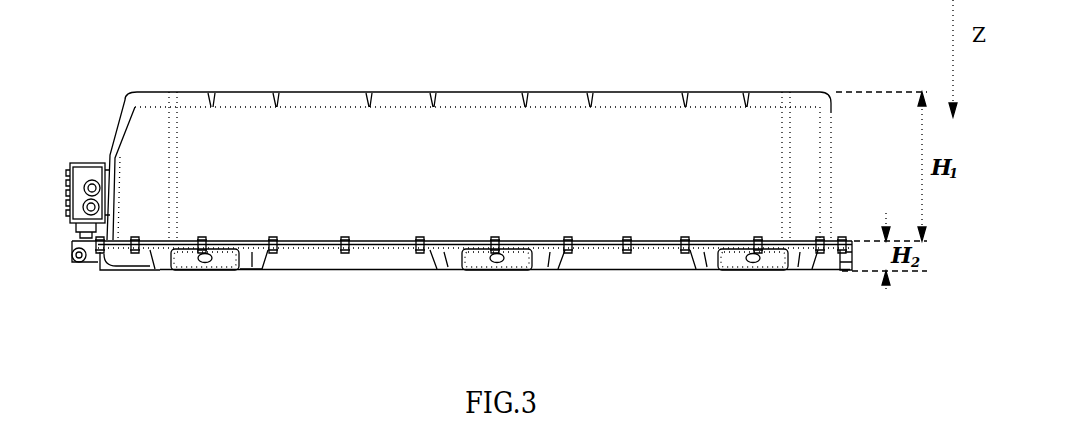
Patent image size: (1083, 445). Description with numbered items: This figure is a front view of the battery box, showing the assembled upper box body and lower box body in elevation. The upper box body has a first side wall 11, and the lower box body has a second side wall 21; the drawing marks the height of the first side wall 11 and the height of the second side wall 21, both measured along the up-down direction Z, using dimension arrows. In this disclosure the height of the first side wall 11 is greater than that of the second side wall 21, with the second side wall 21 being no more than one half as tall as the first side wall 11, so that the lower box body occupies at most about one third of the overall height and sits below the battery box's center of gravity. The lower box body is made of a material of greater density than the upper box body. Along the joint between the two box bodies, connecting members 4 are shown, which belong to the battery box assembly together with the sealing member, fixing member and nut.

The first side wall 11 is at (587, 140).
The second side wall 21 is at (602, 258).
The connecting member 4 is at (330, 248).